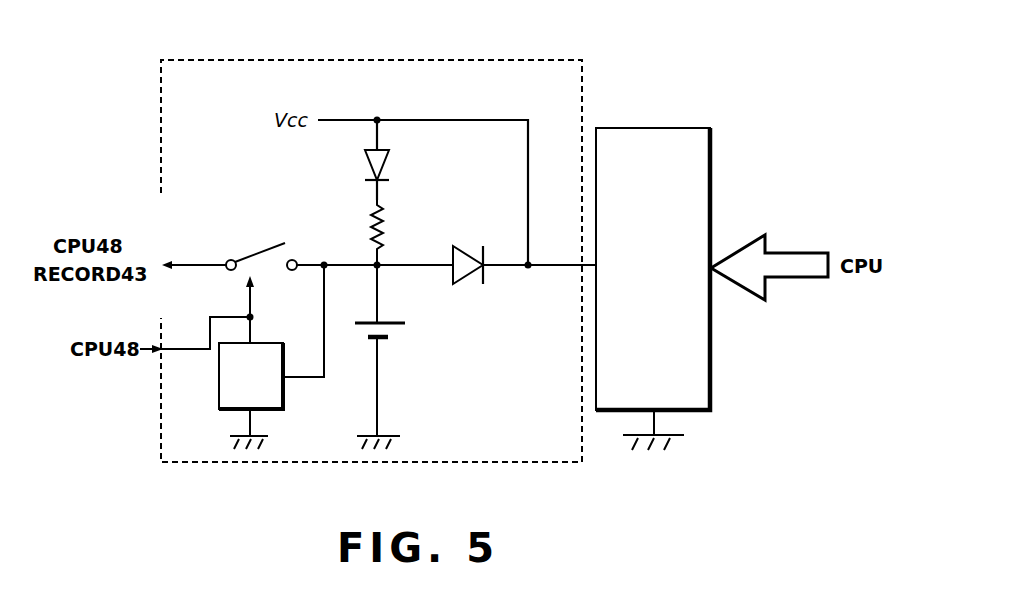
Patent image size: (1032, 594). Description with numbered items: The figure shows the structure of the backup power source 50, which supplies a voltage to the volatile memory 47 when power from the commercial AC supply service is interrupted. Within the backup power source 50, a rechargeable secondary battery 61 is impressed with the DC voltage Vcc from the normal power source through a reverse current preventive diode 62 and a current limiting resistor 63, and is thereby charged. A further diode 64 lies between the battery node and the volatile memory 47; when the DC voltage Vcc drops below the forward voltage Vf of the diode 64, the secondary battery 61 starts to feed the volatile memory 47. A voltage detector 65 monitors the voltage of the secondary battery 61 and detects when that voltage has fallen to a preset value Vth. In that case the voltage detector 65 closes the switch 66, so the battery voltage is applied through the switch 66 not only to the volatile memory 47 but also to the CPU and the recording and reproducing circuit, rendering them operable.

The backup power source 50 is at (380, 60).
The secondary battery 61 is at (406, 330).
The reverse current preventive diode 62 is at (390, 163).
The current limiting resistor 63 is at (384, 218).
The diode 64 is at (470, 246).
The voltage detector 65 is at (219, 403).
The switch 66 is at (258, 252).
The volatile memory 47 is at (712, 196).